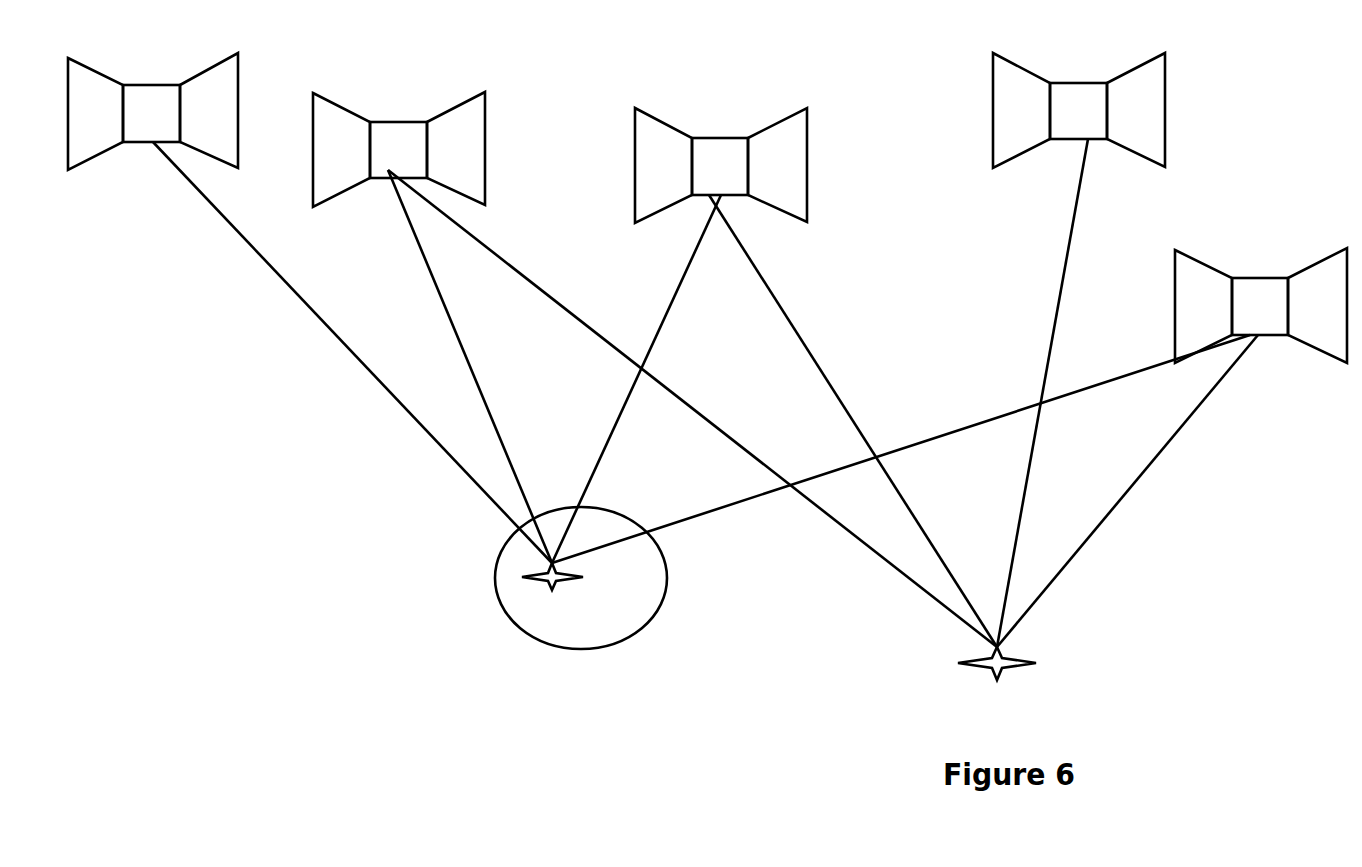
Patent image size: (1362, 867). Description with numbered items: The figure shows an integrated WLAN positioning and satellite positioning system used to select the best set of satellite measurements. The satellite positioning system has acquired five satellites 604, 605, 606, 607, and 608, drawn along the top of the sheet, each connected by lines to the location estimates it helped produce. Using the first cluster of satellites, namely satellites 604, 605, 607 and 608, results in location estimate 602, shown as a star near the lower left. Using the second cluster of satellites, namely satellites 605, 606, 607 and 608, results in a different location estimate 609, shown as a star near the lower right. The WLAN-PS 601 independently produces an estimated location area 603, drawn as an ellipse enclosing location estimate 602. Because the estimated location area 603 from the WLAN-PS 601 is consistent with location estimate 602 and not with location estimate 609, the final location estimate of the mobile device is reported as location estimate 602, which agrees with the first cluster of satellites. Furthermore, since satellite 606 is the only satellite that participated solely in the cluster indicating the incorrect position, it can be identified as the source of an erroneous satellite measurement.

The WLAN-PS 601 is at (569, 579).
The location estimate 602 is at (552, 591).
The estimated location area 603 is at (640, 519).
The satellite 604 is at (153, 108).
The satellite 605 is at (399, 145).
The satellite 606 is at (1079, 107).
The satellite 607 is at (721, 163).
The satellite 608 is at (1261, 303).
The location estimate 609 is at (997, 690).